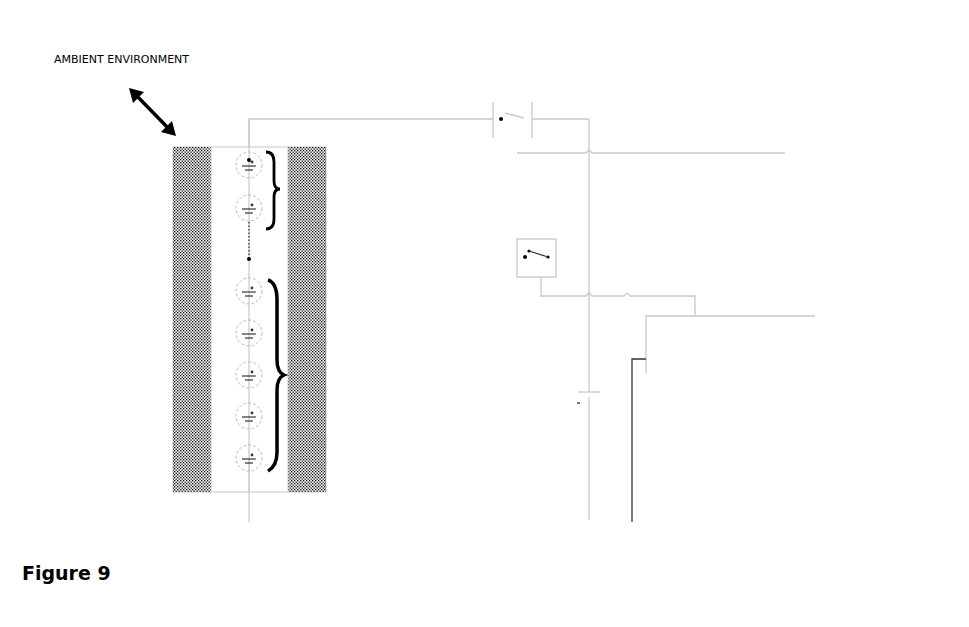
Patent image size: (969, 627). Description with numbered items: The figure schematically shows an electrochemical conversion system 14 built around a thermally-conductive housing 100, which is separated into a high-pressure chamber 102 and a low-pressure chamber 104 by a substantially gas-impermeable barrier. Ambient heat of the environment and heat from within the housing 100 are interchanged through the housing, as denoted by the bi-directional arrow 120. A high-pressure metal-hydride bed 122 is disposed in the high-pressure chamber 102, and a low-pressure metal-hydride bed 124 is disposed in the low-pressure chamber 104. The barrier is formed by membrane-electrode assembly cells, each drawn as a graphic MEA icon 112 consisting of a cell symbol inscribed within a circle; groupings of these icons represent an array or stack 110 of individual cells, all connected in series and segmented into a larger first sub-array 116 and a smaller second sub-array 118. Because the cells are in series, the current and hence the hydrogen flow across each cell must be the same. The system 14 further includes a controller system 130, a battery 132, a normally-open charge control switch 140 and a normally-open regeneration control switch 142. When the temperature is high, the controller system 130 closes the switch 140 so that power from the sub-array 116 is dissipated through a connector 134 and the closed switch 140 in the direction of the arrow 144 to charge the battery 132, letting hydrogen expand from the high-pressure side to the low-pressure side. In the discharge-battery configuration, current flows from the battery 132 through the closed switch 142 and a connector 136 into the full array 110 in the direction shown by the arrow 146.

The electrochemical conversion system 14 is at (491, 24).
The thermally-conductive housing 100 is at (217, 493).
The high-pressure chamber 102 is at (275, 480).
The low-pressure chamber 104 is at (220, 437).
The array or stack of MEA cells 110 is at (256, 476).
The MEA cell icon 112 is at (237, 204).
The first MEA sub-array 116 is at (285, 374).
The second MEA sub-array 118 is at (281, 189).
The bi-directional arrow 120 is at (141, 109).
The high-pressure metal-hydride bed 122 is at (308, 430).
The low-pressure metal-hydride bed 124 is at (183, 308).
The controller system 130 is at (723, 419).
The battery 132 is at (579, 456).
The connector 134 is at (332, 319).
The connector 136 is at (371, 123).
The normally-open charge control switch 140 is at (606, 268).
The normally-open regeneration control switch 142 is at (541, 108).
The direction arrow 144 is at (474, 249).
The direction arrow 146 is at (438, 110).